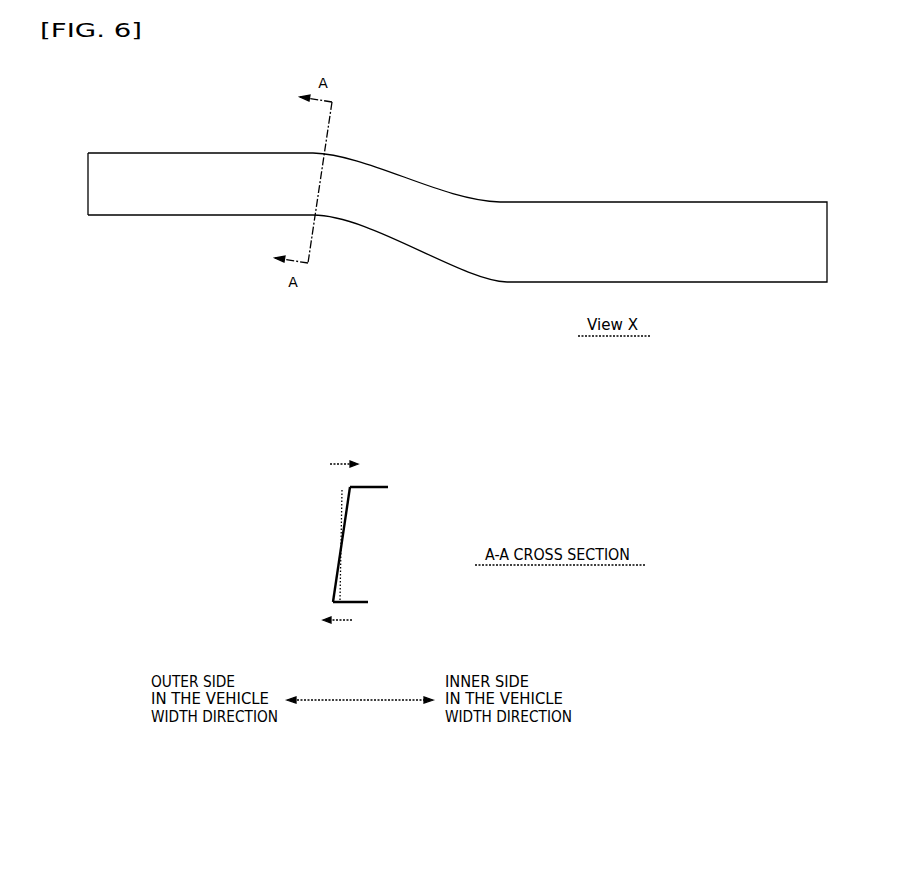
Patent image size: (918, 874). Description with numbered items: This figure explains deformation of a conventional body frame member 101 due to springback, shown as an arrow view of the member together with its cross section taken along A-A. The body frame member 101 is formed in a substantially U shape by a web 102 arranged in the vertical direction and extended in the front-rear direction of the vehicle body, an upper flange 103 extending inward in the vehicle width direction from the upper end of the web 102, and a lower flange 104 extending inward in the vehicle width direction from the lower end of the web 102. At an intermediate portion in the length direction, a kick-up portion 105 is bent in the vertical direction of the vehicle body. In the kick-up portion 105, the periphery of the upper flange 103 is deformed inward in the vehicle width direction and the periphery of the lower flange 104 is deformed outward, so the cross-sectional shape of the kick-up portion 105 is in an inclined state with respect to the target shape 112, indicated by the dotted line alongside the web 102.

The body frame member 101 is at (752, 154).
The web 102 is at (192, 182).
The upper flange 103 is at (139, 153).
The lower flange 104 is at (125, 215).
The kick-up portion 105 is at (418, 142).
The target shape 112 is at (338, 500).